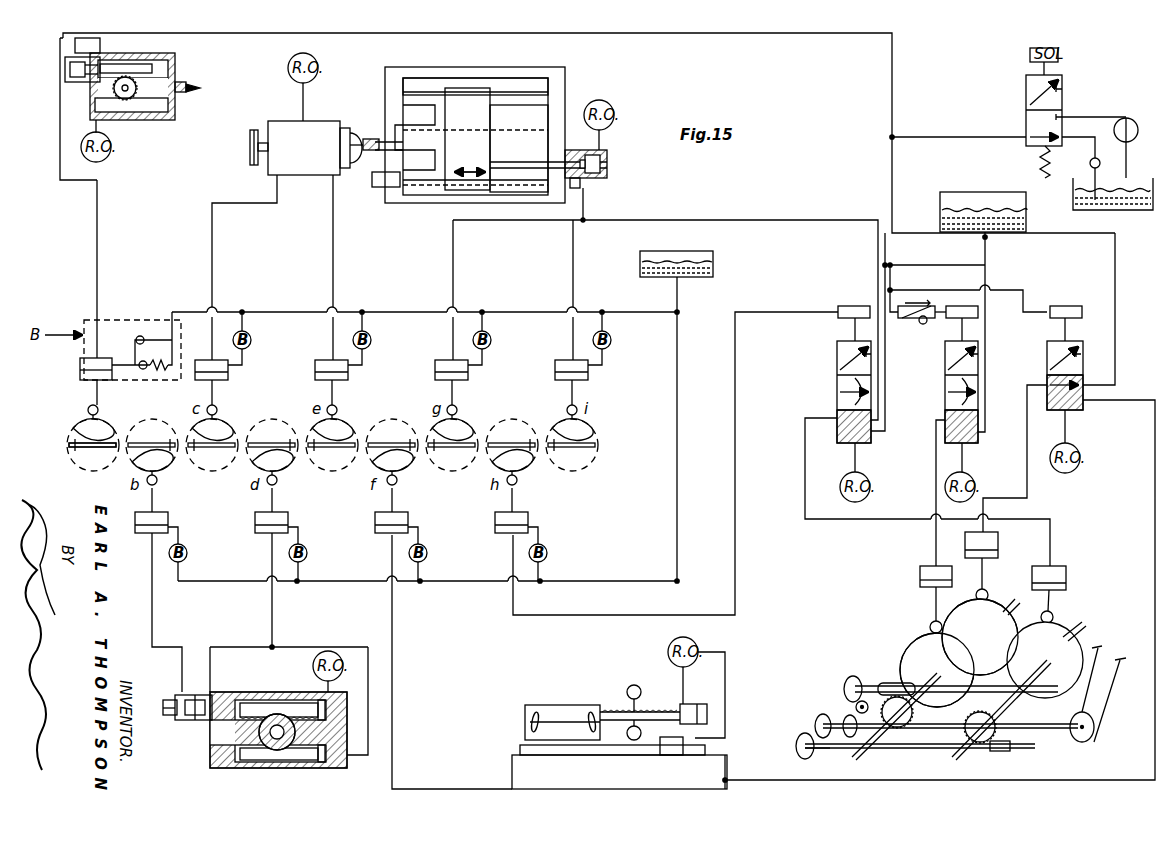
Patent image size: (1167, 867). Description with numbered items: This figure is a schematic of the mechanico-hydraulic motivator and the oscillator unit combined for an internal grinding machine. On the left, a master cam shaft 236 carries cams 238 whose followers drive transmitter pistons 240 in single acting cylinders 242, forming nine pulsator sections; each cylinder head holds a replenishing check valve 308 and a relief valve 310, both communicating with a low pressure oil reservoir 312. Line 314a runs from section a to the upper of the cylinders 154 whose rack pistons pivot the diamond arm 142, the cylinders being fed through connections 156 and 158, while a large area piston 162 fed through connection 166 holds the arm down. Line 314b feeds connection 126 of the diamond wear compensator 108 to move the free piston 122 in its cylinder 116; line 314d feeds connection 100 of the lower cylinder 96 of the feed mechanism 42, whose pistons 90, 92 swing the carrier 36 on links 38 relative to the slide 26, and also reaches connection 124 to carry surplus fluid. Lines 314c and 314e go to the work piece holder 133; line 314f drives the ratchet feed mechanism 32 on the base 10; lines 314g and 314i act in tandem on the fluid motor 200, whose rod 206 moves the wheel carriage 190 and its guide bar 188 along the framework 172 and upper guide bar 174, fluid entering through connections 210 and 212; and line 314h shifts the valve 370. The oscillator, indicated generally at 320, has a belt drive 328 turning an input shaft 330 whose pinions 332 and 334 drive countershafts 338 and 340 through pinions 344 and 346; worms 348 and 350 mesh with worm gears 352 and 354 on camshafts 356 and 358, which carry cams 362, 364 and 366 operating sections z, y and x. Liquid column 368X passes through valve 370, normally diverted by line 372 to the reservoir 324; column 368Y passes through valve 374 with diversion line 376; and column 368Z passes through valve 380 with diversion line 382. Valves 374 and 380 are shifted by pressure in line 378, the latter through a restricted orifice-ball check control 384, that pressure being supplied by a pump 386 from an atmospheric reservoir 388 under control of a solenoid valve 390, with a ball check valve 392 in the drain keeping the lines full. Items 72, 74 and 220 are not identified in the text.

The base 10 is at (525, 770).
The slide 26 is at (520, 743).
The ratchet feed mechanism 32 is at (672, 755).
The carrier 36 is at (565, 705).
The links 38 is at (530, 718).
The feed mechanism 42 is at (290, 692).
The piston cylinder 72 is at (720, 732).
The fluid line 74 is at (702, 765).
The upper piston 90 is at (264, 700).
The lower piston 92 is at (270, 760).
The lower cylinder 96 is at (322, 762).
The connection 100 is at (347, 750).
The diamond wear compensator 108 is at (188, 722).
The cylinder 116 is at (175, 700).
The free piston 122 is at (212, 720).
The connection 124 is at (212, 690).
The connection 126 is at (182, 675).
The work piece holder 133 is at (300, 175).
The arm 142 is at (190, 88).
The cylinders 154 is at (170, 62).
The connection 156 is at (105, 125).
The connection 158 is at (100, 55).
The large area piston 162 is at (65, 70).
The connection 166 is at (75, 45).
The framework 172 is at (565, 78).
The upper guide bar 174 is at (510, 80).
The guide bar 188 is at (495, 185).
The wheel carriage 190 is at (496, 140).
The fluid motor 200 is at (605, 175).
The piston rod 206 is at (518, 162).
The connection 210 is at (605, 128).
The connection 212 is at (592, 198).
The coupling 220 is at (368, 139).
The master cam shaft 236 is at (72, 450).
The cams 238 is at (107, 432).
The transmitter pistons 240 is at (92, 372).
The cylinder 242 is at (80, 366).
The replenishing check valve 308 is at (140, 336).
The relief valve 310 is at (146, 362).
The oil reservoir 312 is at (640, 262).
The liquid column line 314a is at (97, 240).
The liquid column line 314b is at (152, 616).
The flexible line 314c is at (212, 258).
The liquid column 314d is at (272, 614).
The line 314e is at (333, 258).
The liquid column 314f is at (392, 622).
The liquid column 314g is at (453, 276).
The liquid column 314h is at (735, 525).
The liquid column 314i is at (573, 243).
The transmission 320 is at (855, 668).
The reservoir 324 is at (970, 192).
The belt drive 328 is at (1108, 695).
The input drive shaft 330 is at (1075, 740).
The drive pinion 332 is at (855, 710).
The drive pinion 334 is at (815, 725).
The countershaft 338 is at (1005, 702).
The countershaft 340 is at (830, 750).
The pinion 344 is at (845, 685).
The pinion 346 is at (796, 747).
The worm 348 is at (882, 683).
The worm 350 is at (975, 745).
The worm gear 352 is at (900, 722).
The worm gear 354 is at (998, 752).
The camshaft 356 is at (858, 752).
The camshaft 358 is at (1085, 635).
The cam 362 is at (915, 640).
The cam 364 is at (962, 612).
The cam 366 is at (1058, 618).
The liquid column 368X is at (826, 220).
The liquid column 368Y is at (1027, 498).
The liquid column 368Z is at (1000, 282).
The three position valve 370 is at (837, 393).
The line 372 is at (885, 272).
The valve 374 is at (1083, 355).
The line 376 is at (1115, 312).
The fluid line 378 is at (892, 172).
The three-position valve 380 is at (945, 398).
The line 382 is at (985, 252).
The restricted orifice-ball check control 384 is at (915, 322).
The pump 386 is at (1126, 118).
The atmospheric reservoir 388 is at (1138, 180).
The solenoid actuated valve 390 is at (1026, 90).
The ball check valve 392 is at (1090, 168).